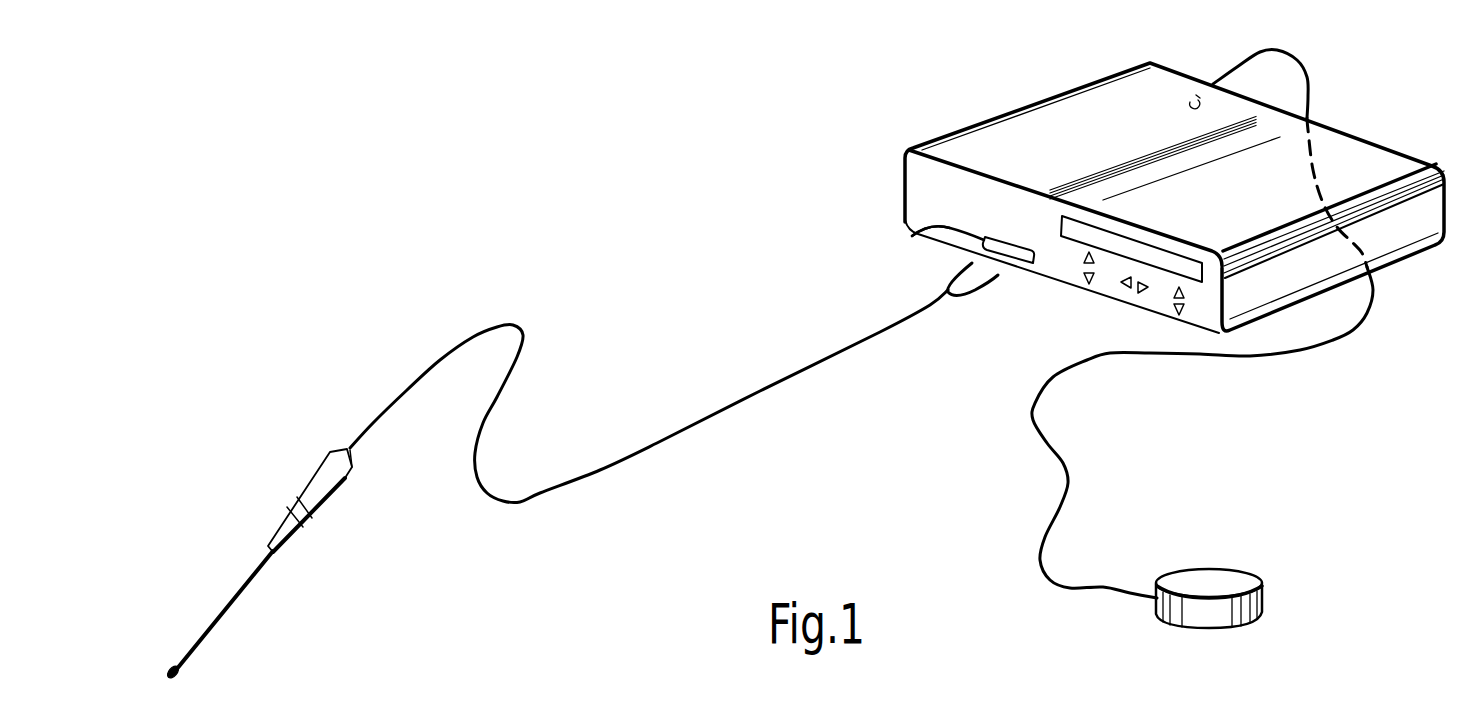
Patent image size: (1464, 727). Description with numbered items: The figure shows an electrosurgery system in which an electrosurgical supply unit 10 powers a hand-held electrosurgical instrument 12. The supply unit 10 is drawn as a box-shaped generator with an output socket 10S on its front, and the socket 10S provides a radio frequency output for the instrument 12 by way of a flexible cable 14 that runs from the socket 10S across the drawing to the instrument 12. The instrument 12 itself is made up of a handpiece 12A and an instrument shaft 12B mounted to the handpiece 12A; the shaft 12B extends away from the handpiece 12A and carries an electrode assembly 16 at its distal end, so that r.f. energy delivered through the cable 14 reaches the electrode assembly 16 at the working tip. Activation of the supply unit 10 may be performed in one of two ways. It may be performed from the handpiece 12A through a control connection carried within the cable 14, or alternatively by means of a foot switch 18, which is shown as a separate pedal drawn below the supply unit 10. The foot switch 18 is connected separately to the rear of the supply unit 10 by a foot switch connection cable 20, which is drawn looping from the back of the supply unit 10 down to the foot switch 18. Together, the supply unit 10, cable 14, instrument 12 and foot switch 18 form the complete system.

The electrosurgical supply unit 10 is at (985, 122).
The output socket 10S is at (920, 232).
The electrosurgical instrument 12 is at (281, 547).
The handpiece 12A is at (327, 483).
The instrument shaft 12B is at (237, 584).
The flexible cable 14 is at (518, 502).
The electrode assembly 16 is at (184, 669).
The foot switch 18 is at (1237, 587).
The foot switch connection cable 20 is at (1113, 354).